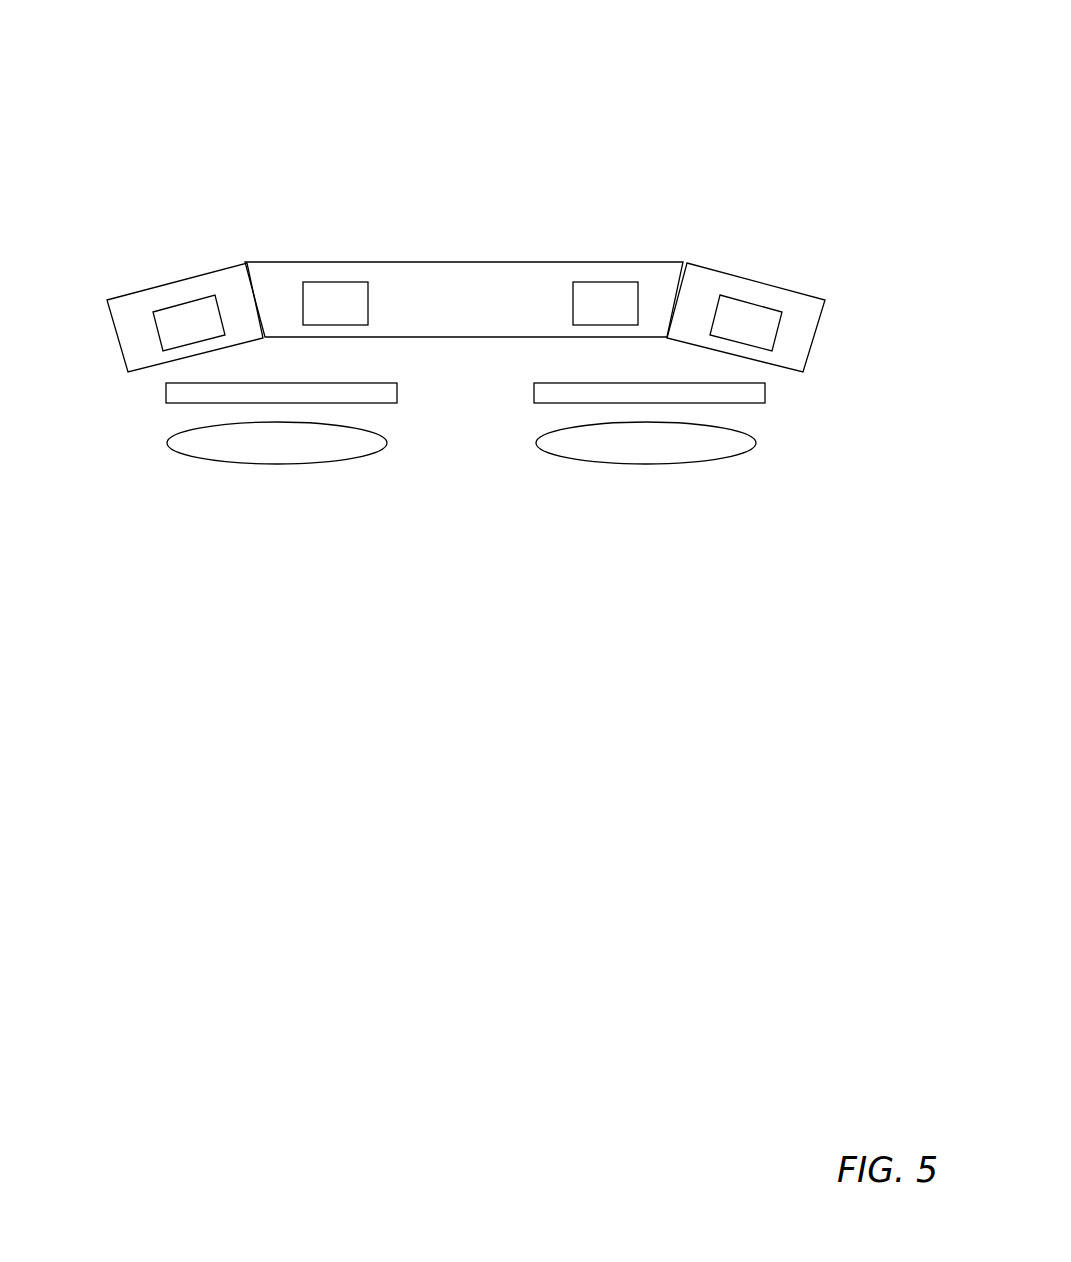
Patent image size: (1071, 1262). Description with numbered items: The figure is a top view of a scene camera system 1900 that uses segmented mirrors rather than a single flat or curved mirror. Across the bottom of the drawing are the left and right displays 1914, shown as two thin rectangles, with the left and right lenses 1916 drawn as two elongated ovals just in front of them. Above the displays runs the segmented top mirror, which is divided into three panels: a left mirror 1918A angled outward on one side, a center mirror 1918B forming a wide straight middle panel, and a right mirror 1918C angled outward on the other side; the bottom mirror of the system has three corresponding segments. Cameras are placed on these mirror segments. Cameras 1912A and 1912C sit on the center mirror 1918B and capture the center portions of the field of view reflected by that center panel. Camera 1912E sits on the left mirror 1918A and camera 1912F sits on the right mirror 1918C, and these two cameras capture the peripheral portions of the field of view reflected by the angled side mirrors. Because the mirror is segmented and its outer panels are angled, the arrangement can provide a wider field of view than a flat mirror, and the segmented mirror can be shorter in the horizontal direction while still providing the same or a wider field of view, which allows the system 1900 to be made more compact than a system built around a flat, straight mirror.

The scene camera system 1900 is at (160, 75).
The left mirror 1918A is at (178, 266).
The center mirror 1918B is at (467, 248).
The right mirror 1918C is at (760, 266).
The camera 1912A is at (335, 303).
The camera 1912C is at (605, 303).
The camera 1912E is at (189, 323).
The camera 1912F is at (746, 323).
The displays 1914 is at (465, 384).
The lenses 1916 is at (461, 443).